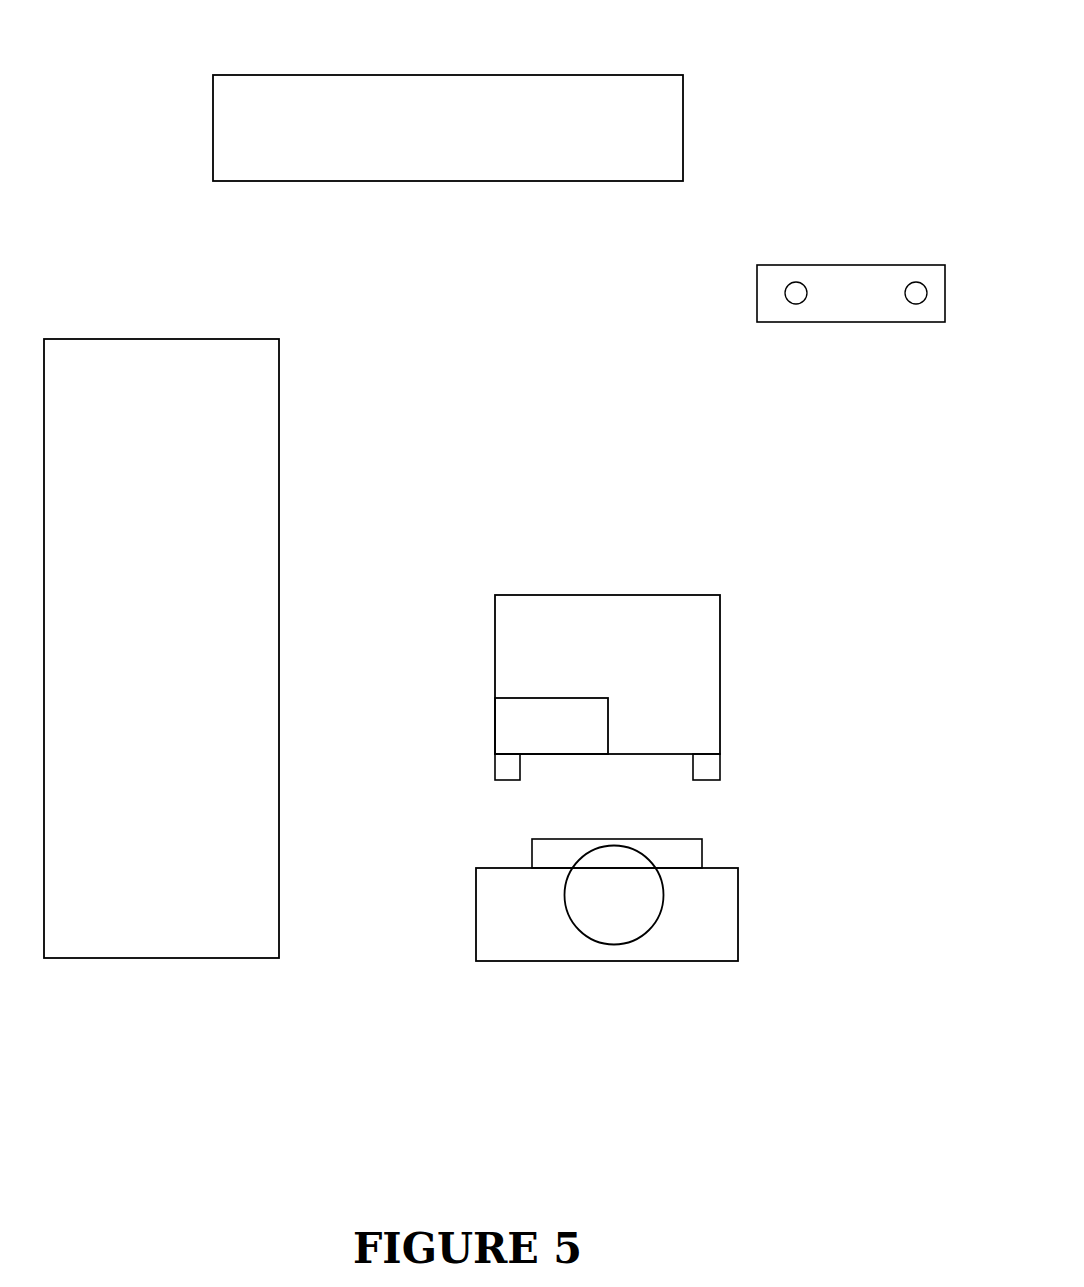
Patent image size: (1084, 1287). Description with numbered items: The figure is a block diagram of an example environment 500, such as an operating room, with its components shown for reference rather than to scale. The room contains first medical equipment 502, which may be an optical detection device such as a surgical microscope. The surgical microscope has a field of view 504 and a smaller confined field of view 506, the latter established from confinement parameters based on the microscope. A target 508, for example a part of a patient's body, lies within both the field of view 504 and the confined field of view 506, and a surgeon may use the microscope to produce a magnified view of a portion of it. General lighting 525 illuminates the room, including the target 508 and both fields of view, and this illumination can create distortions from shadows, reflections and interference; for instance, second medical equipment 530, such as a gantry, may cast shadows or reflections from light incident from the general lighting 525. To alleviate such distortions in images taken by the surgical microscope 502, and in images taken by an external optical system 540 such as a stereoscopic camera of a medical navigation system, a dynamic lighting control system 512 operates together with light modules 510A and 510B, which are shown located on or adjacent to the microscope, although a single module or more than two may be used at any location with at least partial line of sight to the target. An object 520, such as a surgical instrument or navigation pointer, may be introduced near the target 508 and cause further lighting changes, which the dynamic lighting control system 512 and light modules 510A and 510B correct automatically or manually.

The environment 500 is at (846, 102).
The first medical equipment 502 is at (672, 595).
The field of view 504 is at (738, 943).
The confined field of view 506 is at (702, 838).
The target 508 is at (532, 773).
The light module 510A is at (494, 780).
The light module 510B is at (722, 778).
The dynamic lighting control system 512 is at (551, 726).
The object 520 is at (570, 835).
The general lighting 525 is at (532, 75).
The second medical equipment 530 is at (232, 339).
The external optical system 540 is at (850, 265).